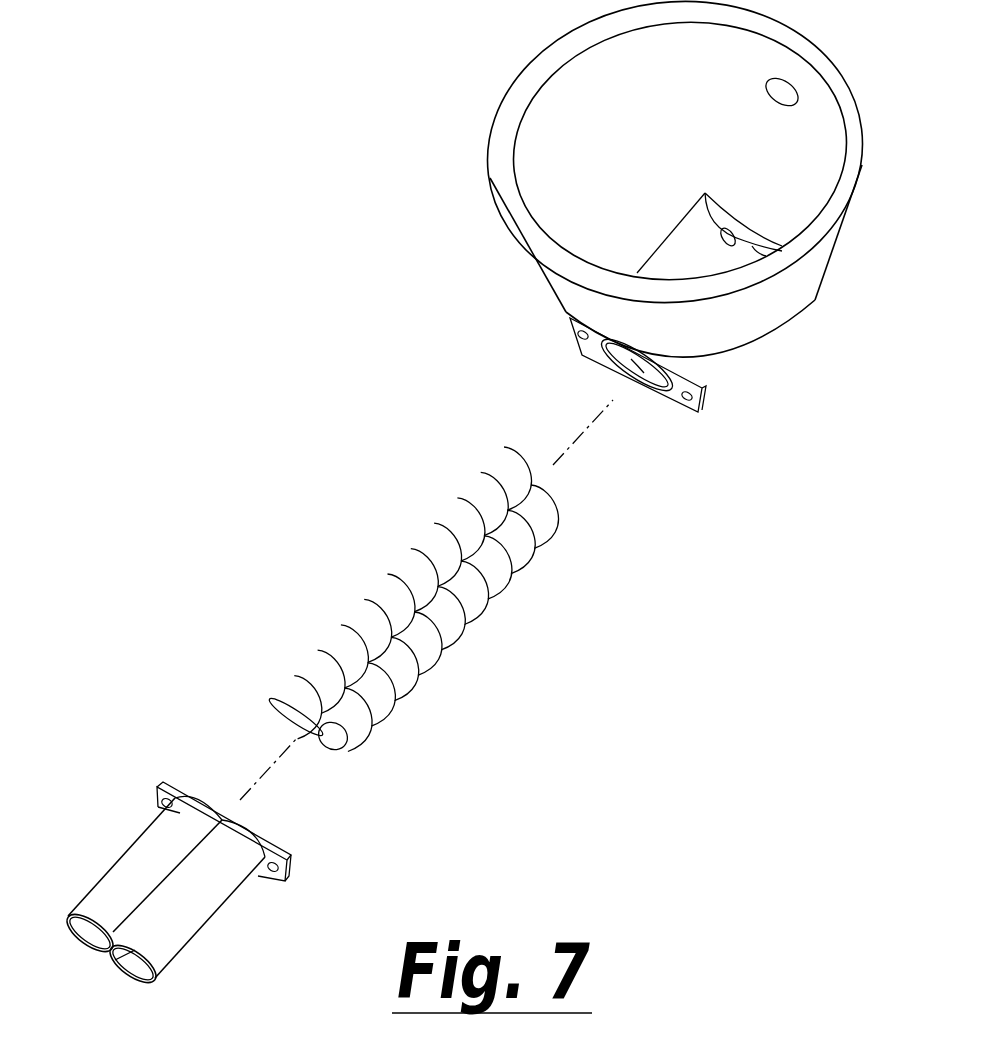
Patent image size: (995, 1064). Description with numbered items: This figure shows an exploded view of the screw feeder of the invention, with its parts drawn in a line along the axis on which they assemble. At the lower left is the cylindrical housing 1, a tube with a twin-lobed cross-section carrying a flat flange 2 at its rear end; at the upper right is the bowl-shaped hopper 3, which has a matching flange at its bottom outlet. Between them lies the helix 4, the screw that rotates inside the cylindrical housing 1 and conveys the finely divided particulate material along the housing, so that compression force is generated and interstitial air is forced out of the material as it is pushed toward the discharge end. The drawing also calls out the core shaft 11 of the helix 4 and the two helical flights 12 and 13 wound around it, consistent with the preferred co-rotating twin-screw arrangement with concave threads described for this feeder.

The cylindrical housing 1 is at (120, 853).
The tube flange 2 is at (288, 812).
The hopper bowl 3 is at (588, 134).
The helix 4 is at (442, 599).
The conveyor core shaft 11 is at (509, 607).
The first helical flight 12 is at (337, 603).
The second helical flight 13 is at (441, 508).